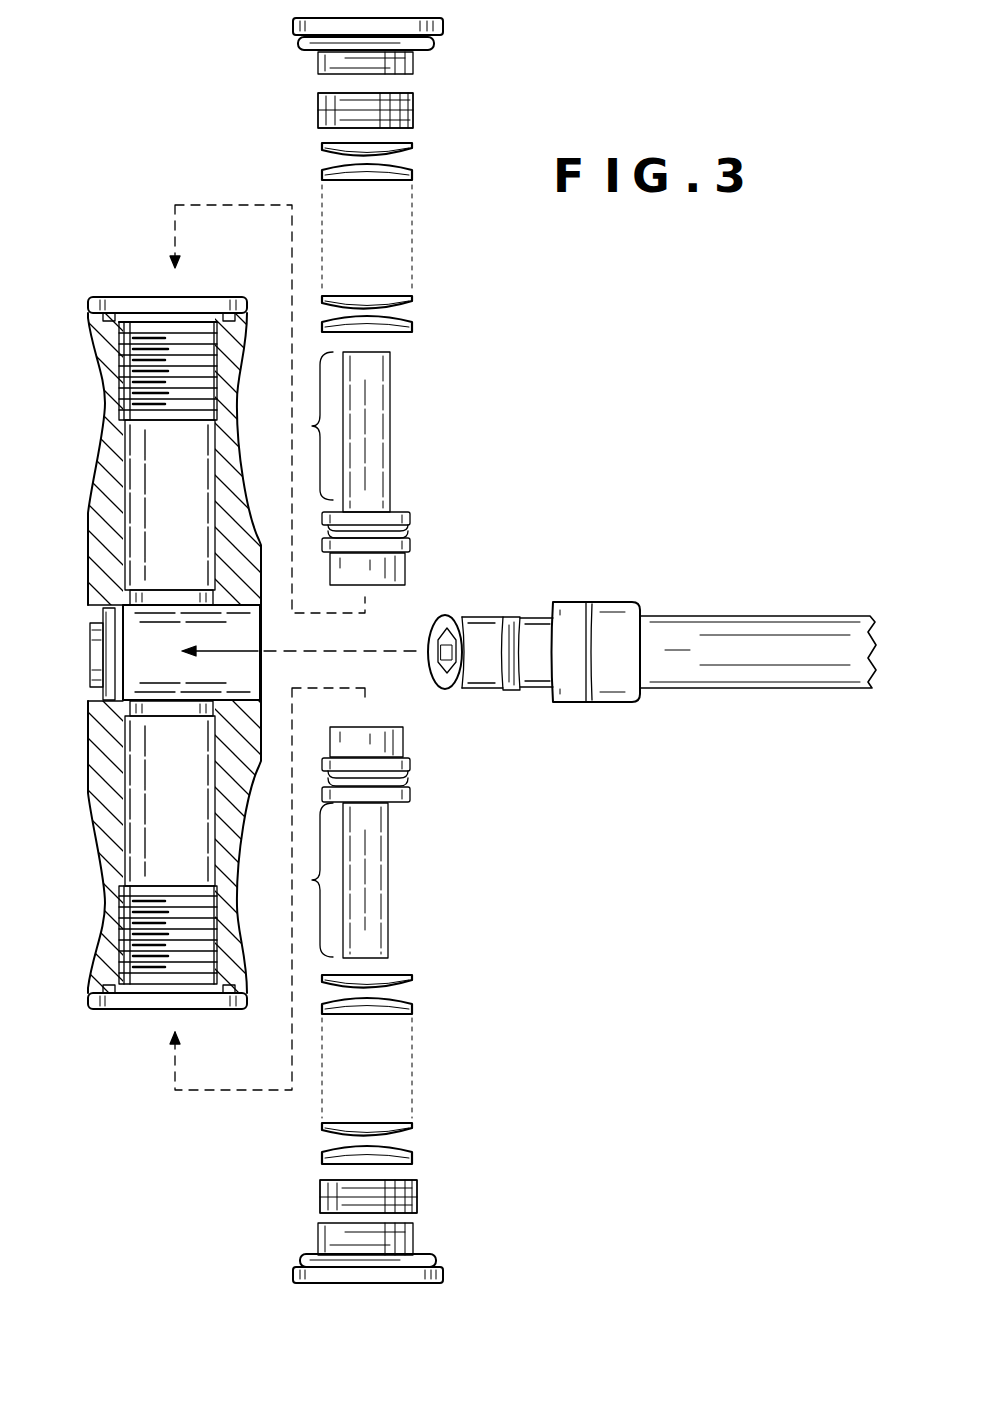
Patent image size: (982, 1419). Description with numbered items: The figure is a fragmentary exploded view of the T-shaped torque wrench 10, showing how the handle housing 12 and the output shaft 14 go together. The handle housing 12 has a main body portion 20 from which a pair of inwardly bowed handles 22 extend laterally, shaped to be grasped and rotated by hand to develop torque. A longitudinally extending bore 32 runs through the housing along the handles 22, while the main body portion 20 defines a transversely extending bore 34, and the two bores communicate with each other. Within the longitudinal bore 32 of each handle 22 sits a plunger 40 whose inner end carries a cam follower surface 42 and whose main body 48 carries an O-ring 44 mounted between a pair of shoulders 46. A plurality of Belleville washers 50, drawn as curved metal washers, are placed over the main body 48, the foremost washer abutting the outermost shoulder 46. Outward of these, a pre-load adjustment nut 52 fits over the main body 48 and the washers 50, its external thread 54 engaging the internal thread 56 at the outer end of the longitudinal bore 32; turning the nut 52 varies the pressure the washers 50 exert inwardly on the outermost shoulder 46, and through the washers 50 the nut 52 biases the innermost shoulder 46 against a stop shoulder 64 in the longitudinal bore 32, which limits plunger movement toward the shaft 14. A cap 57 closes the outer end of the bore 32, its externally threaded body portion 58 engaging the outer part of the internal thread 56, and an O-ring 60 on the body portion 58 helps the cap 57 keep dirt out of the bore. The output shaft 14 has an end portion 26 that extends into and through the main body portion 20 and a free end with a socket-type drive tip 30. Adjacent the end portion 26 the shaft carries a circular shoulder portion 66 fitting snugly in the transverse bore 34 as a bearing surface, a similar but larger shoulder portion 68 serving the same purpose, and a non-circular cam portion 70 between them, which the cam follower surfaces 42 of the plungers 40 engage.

The torque wrench 10 is at (478, 372).
The handle housing 12 is at (146, 290).
The output shaft 14 is at (705, 600).
The main body portion 20 is at (105, 625).
The handles 22 is at (122, 412).
The end portion 26 is at (510, 690).
The drive tip 30 is at (432, 642).
The longitudinally extending bore 32 is at (160, 490).
The transversely extending bore 34 is at (150, 660).
The plunger 40 is at (395, 425).
The cam follower surface 42 is at (405, 578).
The O-ring 44 is at (410, 532).
The shoulders 46 is at (410, 515).
The main body 48 is at (312, 426).
The Belleville washers 50 is at (413, 172).
The pre-load adjustment nut 52 is at (325, 100).
The external thread 54 is at (415, 115).
The internal thread 56 is at (135, 350).
The cap 57 is at (443, 27).
The externally threaded body portion 58 is at (415, 62).
The O-ring 60 is at (300, 45).
The stop shoulder 64 is at (200, 585).
The shoulder portion 66 is at (470, 690).
The shoulder portion 68 is at (630, 695).
The cam portion 70 is at (553, 690).